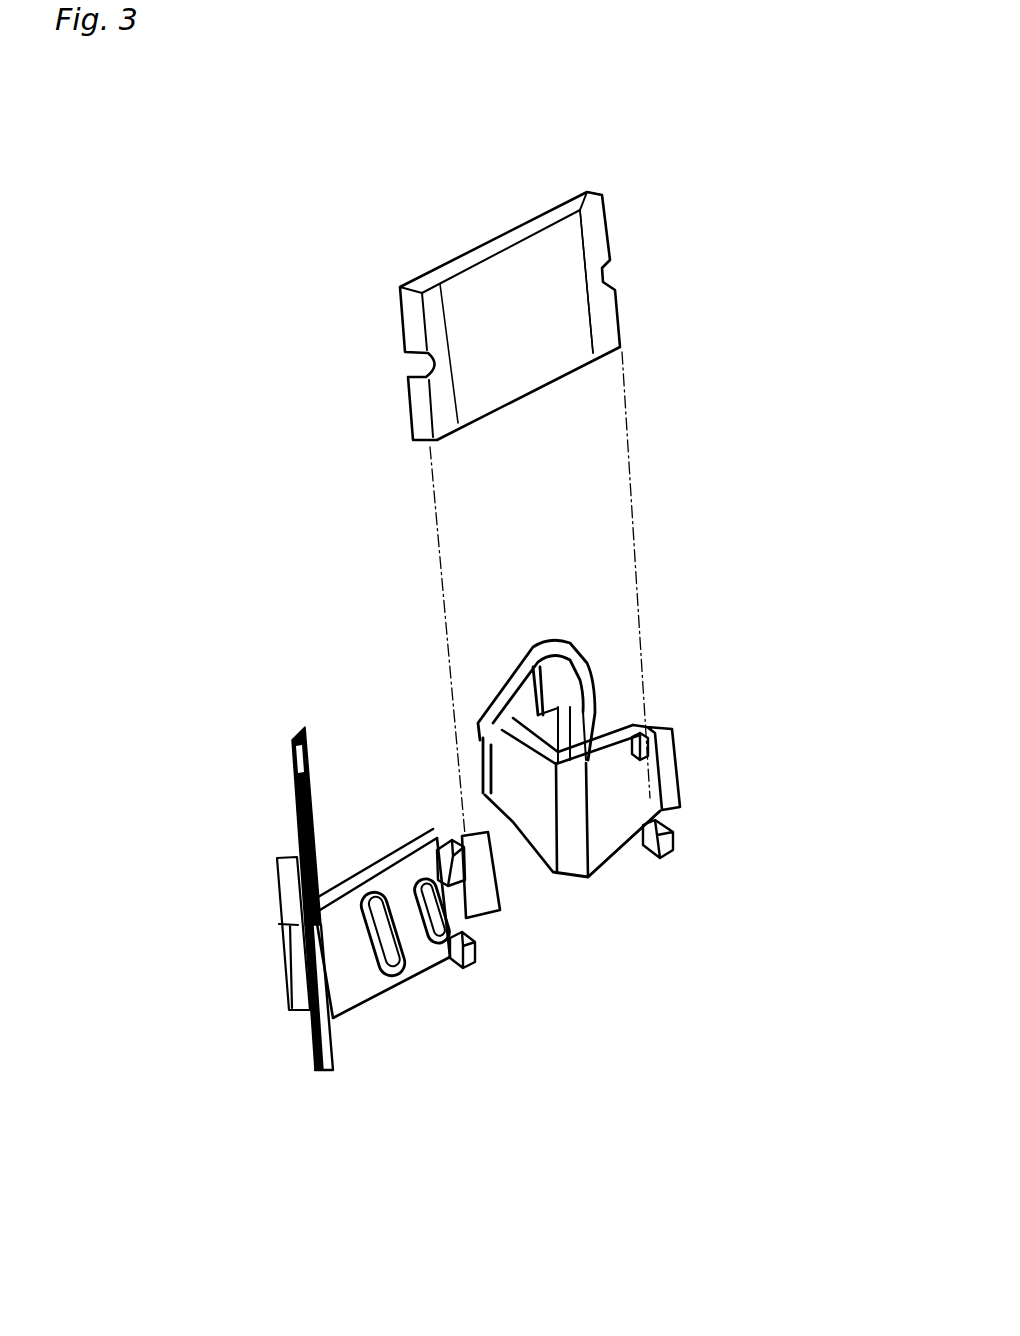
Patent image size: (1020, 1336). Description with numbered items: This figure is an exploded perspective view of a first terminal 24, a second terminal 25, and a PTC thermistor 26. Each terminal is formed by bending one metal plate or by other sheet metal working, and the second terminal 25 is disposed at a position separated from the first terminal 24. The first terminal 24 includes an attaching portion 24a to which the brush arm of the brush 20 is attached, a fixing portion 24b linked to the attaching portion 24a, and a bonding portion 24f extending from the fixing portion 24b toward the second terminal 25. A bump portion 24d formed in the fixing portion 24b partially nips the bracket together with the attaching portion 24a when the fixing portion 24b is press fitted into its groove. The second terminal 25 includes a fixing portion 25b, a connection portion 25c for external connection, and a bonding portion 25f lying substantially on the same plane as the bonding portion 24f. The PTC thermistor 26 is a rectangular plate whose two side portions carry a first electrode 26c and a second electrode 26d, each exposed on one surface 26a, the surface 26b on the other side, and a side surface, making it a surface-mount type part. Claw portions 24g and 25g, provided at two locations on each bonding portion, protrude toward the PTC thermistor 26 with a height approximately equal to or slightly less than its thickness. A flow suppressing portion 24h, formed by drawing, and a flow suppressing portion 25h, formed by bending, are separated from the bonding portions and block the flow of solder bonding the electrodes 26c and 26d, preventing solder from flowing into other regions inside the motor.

The brush 20 is at (494, 903).
The first terminal 24 is at (443, 998).
The attaching portion 24a is at (333, 1048).
The fixing portion 24b is at (355, 992).
The bump portion 24d is at (383, 893).
The bonding portion 24f is at (485, 877).
The claw portion 24g is at (457, 860).
The flow suppressing portion 24h is at (443, 880).
The second terminal 25 is at (601, 781).
The fixing portion 25b is at (537, 778).
The connection portion 25c is at (556, 700).
The bonding portion 25f is at (610, 832).
The claw portion 25g is at (681, 810).
The flow suppressing portion 25h is at (688, 773).
The PTC thermistor 26 is at (550, 292).
The one surface 26a is at (451, 253).
The surface on the other side 26b is at (512, 380).
The first electrode 26c is at (400, 332).
The second electrode 26d is at (567, 200).